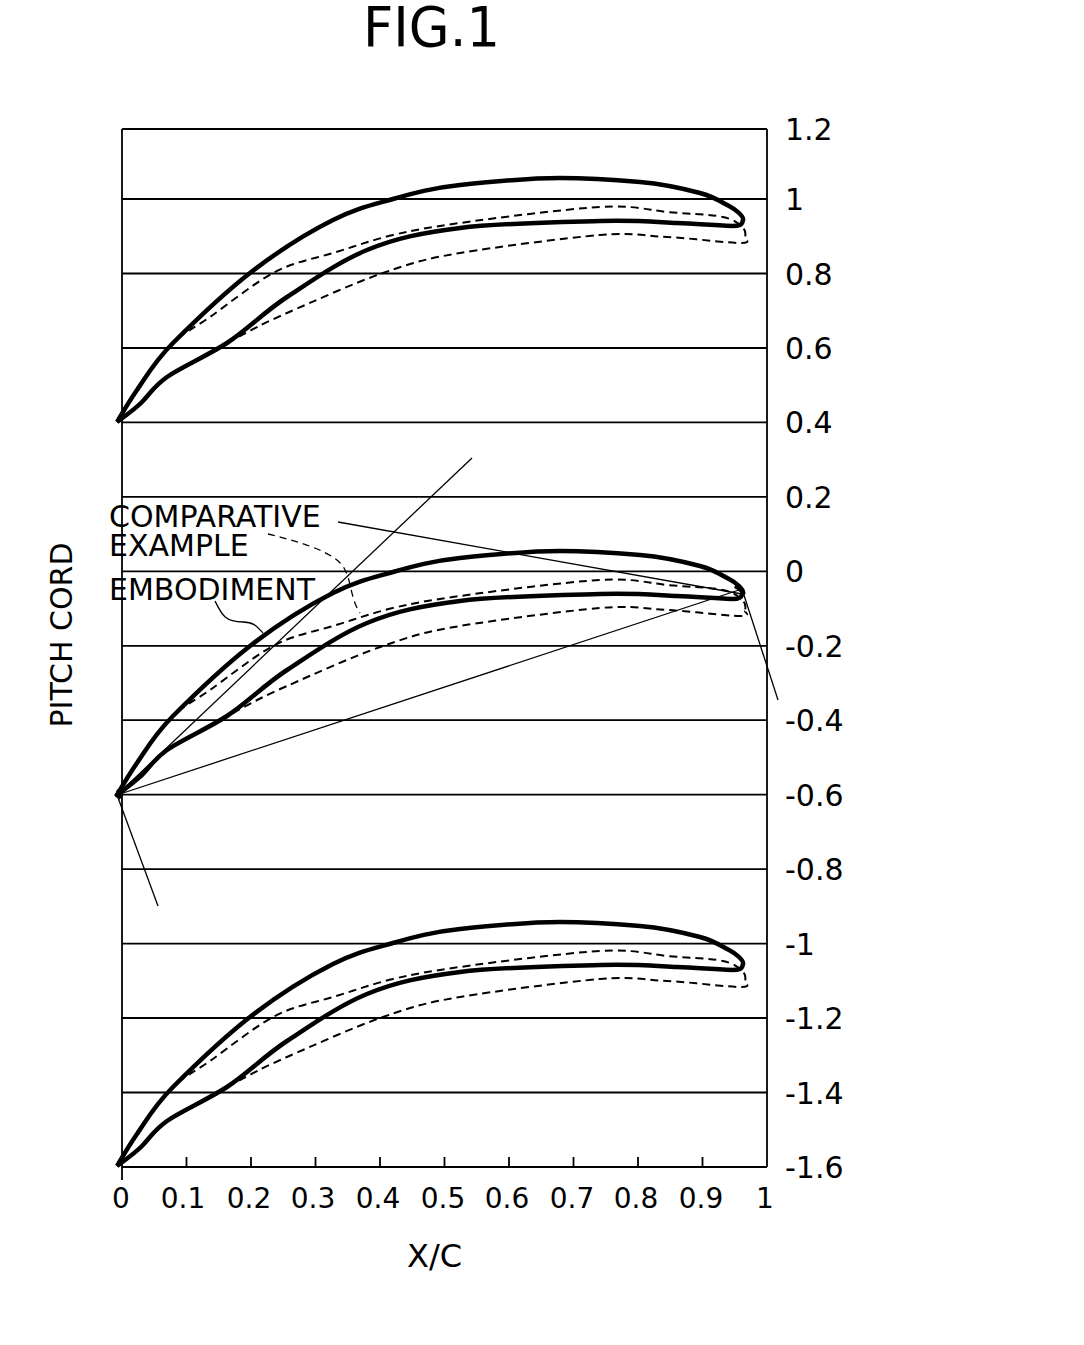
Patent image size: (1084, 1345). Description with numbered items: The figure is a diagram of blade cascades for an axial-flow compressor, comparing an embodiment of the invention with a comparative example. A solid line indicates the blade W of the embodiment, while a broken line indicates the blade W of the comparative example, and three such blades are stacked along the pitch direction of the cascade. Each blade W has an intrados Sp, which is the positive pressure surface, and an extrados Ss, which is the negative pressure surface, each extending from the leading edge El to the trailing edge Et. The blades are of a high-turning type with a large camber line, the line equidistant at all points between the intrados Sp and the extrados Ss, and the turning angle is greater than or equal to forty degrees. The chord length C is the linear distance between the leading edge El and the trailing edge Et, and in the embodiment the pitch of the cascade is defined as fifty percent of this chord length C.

The extrados Ss is at (570, 584).
The intrados Sp is at (523, 600).
The blade W is at (432, 645).
The trailing edge Et is at (739, 597).
The leading edge El is at (119, 797).
The chord length C is at (159, 889).